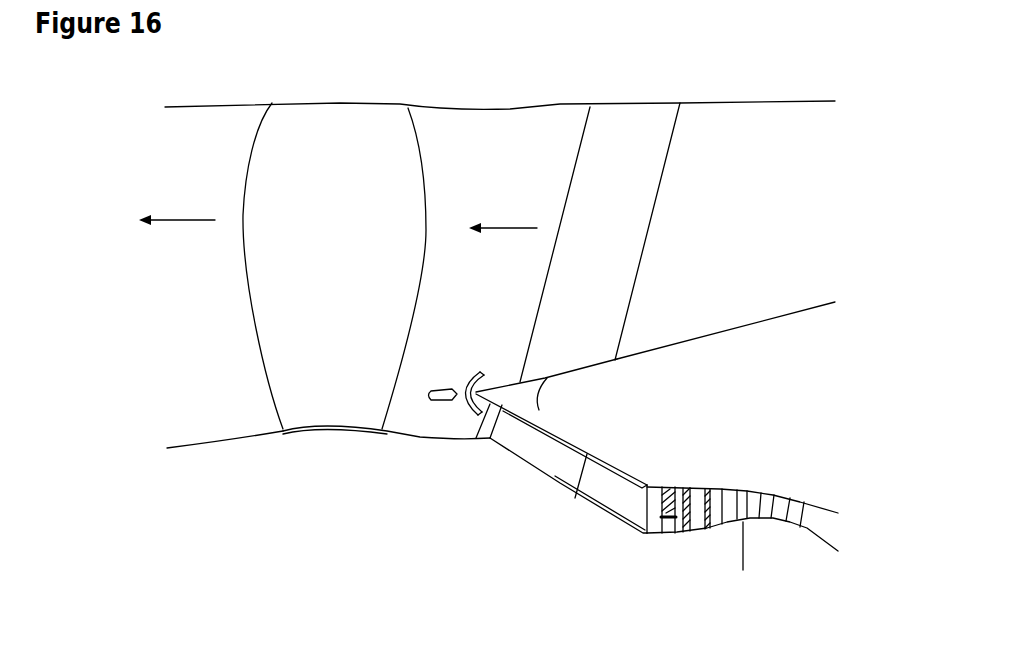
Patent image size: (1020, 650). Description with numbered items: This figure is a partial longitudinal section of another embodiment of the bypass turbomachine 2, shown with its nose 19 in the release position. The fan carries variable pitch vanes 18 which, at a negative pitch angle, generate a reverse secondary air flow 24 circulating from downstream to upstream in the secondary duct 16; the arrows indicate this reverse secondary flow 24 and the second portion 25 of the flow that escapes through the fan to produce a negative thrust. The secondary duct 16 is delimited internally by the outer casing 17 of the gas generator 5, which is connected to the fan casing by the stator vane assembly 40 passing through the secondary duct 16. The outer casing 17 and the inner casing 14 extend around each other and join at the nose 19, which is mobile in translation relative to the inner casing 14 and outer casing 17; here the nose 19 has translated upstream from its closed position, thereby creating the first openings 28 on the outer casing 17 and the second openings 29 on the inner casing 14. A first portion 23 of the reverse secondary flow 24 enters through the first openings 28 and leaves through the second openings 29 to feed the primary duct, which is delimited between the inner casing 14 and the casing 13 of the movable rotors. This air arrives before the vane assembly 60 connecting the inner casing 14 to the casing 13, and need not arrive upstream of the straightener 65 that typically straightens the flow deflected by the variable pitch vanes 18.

The bypass turbomachine 2 is at (110, 207).
The variable pitch vanes 18 is at (300, 155).
The second portion of the reverse secondary flow 25 is at (177, 218).
The reverse secondary air flow 24 is at (502, 224).
The stator vane assembly 40 is at (641, 138).
The secondary duct 16 is at (720, 215).
The outer casing 17 is at (712, 338).
The gas generator 5 is at (796, 307).
The nose 19 is at (437, 388).
The first portion of the reverse secondary flow 23 is at (468, 380).
The first openings 28 is at (474, 377).
The straightener 65 is at (478, 412).
The casing of the movable rotors 13 is at (468, 425).
The second openings 29 is at (480, 406).
The inner casing 14 is at (575, 498).
The vane assembly 60 is at (677, 532).